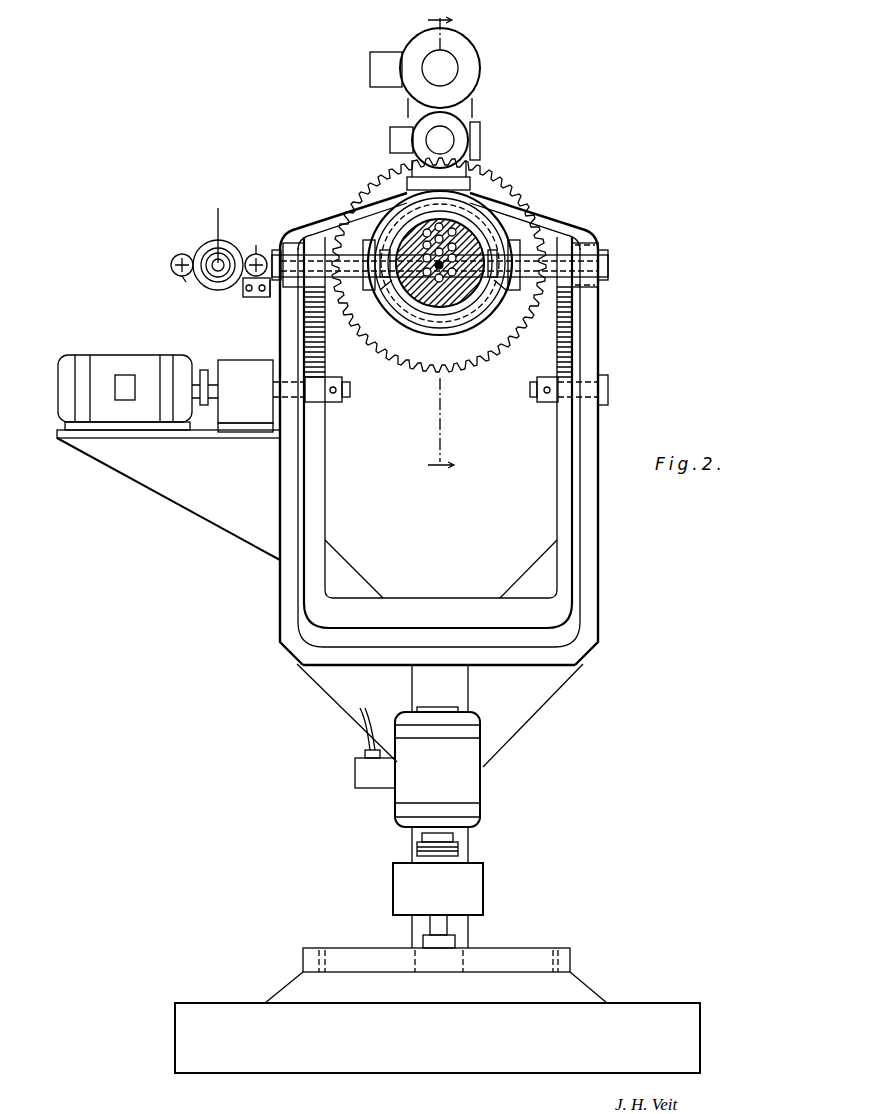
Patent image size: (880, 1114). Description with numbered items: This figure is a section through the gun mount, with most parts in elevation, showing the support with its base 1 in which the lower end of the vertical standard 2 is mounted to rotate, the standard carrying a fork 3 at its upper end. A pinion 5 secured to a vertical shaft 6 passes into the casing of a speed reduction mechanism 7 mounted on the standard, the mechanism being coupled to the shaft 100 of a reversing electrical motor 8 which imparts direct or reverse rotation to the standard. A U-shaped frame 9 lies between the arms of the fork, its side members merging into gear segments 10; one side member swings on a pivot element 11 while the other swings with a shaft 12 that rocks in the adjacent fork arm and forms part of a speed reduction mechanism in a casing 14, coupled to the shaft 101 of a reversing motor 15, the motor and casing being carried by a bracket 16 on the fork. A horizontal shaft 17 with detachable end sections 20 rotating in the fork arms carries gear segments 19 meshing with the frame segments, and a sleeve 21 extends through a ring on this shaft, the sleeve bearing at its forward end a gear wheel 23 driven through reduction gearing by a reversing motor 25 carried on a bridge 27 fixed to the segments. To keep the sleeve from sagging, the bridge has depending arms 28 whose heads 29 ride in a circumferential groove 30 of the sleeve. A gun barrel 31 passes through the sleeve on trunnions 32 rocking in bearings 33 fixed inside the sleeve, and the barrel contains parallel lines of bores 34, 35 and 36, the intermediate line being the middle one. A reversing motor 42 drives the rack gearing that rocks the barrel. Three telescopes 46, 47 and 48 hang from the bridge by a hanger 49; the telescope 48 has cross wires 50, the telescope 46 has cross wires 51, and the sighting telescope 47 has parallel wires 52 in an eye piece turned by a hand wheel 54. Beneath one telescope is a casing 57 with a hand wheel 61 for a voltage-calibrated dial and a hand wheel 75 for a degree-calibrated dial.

The base 1 is at (370, 1078).
The vertical standard 2 is at (470, 843).
The fork 3 is at (622, 612).
The pinion 5 is at (616, 998).
The vertical shaft 6 is at (432, 925).
The speed reduction mechanism 7 is at (478, 880).
The electrical motor 8 is at (468, 786).
The U-shaped frame 9 is at (430, 608).
The gear segments 10 is at (326, 352).
The pivot element 11 is at (610, 394).
The shaft 12 is at (350, 390).
The casing 14 is at (247, 418).
The electrical motor 15 is at (60, 398).
The bracket 16 is at (184, 495).
The horizontal shaft 17 is at (343, 262).
The gear segments 19 is at (312, 318).
The detachable end sections 20 is at (278, 255).
The sleeve 21 is at (440, 330).
The gear wheel 23 is at (486, 360).
The reversing electrical motor 25 is at (466, 136).
The bridge 27 is at (580, 228).
The depending arms 28 is at (442, 277).
The heads 29 is at (503, 250).
The circumferential groove 30 is at (474, 305).
The gun barrel 31 is at (417, 302).
The trunnions 32 is at (392, 205).
The bearings 33 is at (402, 290).
The line of bores 34 is at (418, 232).
The intermediate line of bores 35 is at (442, 232).
The line of bores 36 is at (456, 250).
The reversing electric motor 42 is at (482, 68).
The telescope 46 is at (252, 254).
The telescope 47 is at (209, 223).
The telescope 48 is at (183, 279).
The hanger 49 is at (323, 198).
The cross wires 50 is at (171, 268).
The cross wires 51 is at (257, 246).
The parallel wires 52 is at (212, 258).
The hand wheel 54 is at (214, 290).
The casing 57 is at (260, 294).
The hand wheel 61 is at (247, 291).
The hand wheel 75 is at (270, 292).
The motor shaft 100 is at (425, 842).
The motor shaft 101 is at (198, 390).